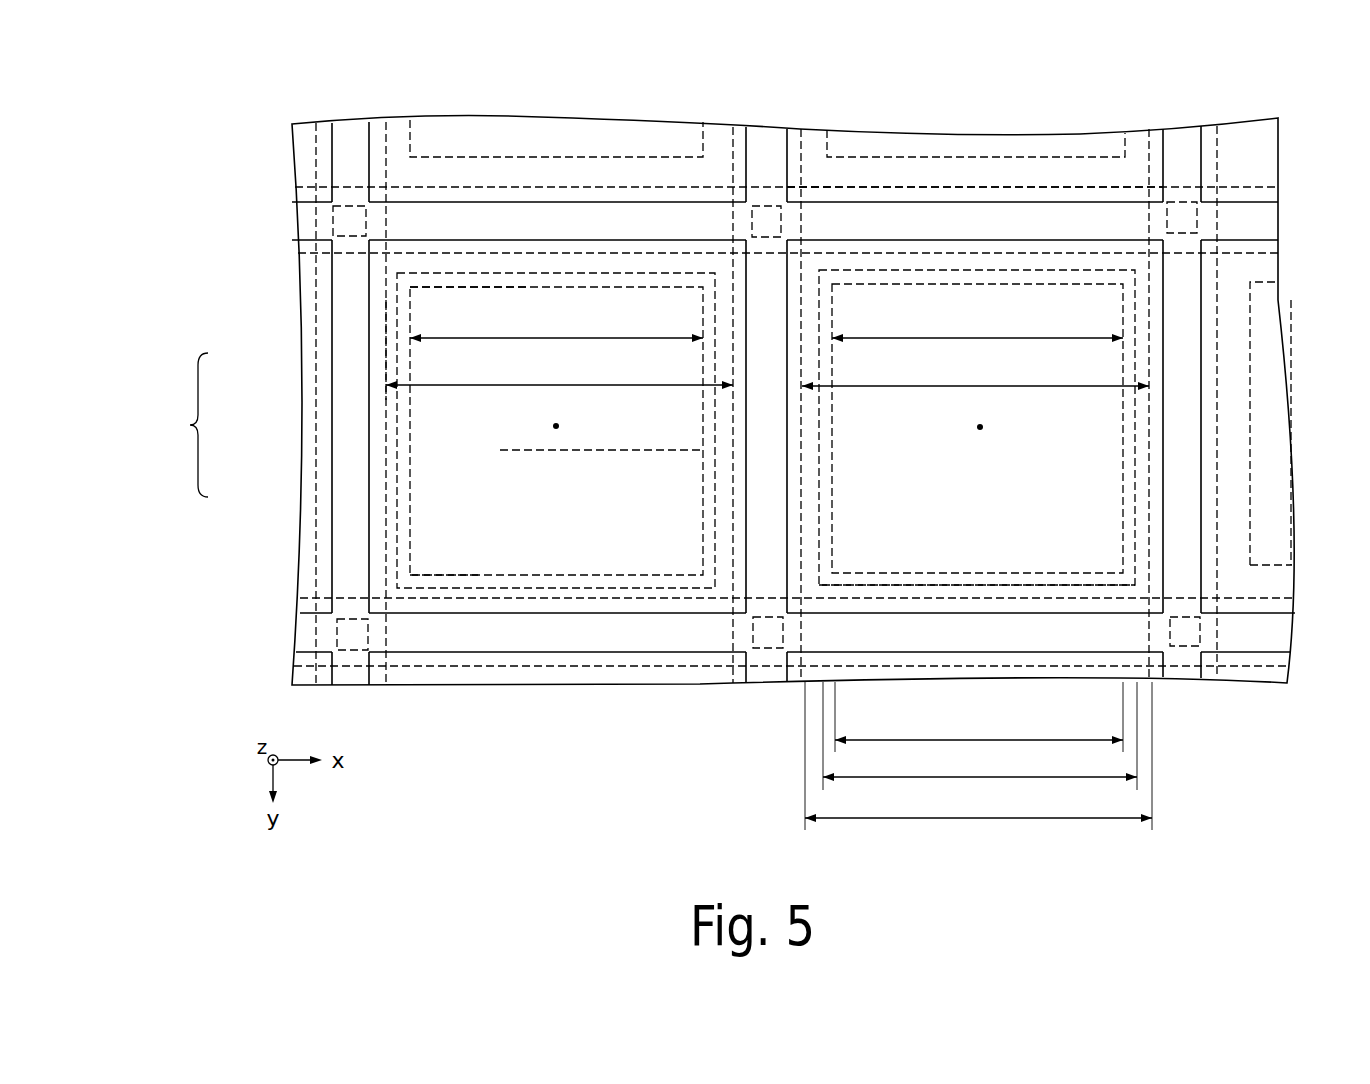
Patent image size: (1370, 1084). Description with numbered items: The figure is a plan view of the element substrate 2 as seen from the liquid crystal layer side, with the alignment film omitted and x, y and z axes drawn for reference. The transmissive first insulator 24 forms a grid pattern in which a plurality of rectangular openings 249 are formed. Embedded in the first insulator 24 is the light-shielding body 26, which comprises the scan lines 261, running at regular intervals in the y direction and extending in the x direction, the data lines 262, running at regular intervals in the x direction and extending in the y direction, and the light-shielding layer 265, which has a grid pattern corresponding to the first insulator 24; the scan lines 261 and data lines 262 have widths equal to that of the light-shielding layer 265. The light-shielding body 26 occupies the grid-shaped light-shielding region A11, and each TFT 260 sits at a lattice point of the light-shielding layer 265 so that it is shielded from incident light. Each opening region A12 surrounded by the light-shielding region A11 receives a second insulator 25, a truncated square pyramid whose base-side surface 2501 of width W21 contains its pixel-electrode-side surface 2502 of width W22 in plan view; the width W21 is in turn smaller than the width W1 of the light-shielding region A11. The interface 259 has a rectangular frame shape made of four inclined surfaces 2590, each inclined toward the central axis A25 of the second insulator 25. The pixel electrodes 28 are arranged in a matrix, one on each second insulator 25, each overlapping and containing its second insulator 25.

The element substrate 2 is at (1298, 101).
The first insulator 24 is at (947, 156).
The second insulator 25 is at (578, 328).
The light-shielding body 26 is at (903, 186).
The pixel electrode 28 is at (366, 268).
The opening 249 is at (766, 351).
The interface 259 is at (176, 425).
The inclined surface 2590 is at (530, 280).
The TFT 260 is at (1186, 200).
The scan line 261 is at (447, 187).
The data line 262 is at (318, 556).
The light-shielding layer 265 is at (1008, 186).
The surface of the second insulator on the base material side 2501 is at (937, 573).
The surface of the second insulator on the pixel electrode side 2502 is at (1027, 585).
The light-shielding region A11 is at (811, 186).
The opening region A12 is at (767, 398).
The central axis of the second insulator A25 is at (565, 430).
The width of the light-shielding region W1 is at (978, 764).
The width of the surface 2501 W21 is at (980, 743).
The width of the surface 2502 W22 is at (979, 726).